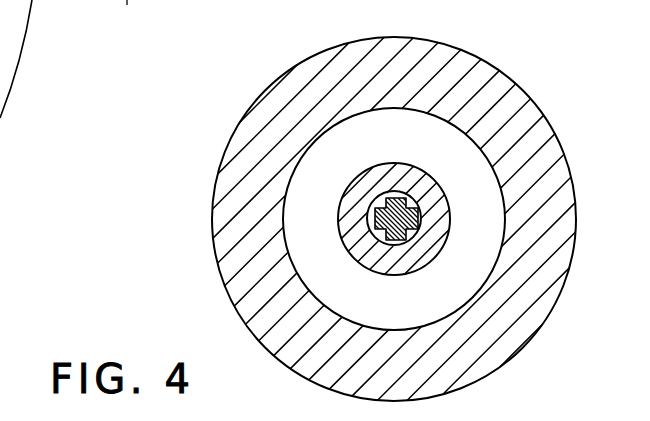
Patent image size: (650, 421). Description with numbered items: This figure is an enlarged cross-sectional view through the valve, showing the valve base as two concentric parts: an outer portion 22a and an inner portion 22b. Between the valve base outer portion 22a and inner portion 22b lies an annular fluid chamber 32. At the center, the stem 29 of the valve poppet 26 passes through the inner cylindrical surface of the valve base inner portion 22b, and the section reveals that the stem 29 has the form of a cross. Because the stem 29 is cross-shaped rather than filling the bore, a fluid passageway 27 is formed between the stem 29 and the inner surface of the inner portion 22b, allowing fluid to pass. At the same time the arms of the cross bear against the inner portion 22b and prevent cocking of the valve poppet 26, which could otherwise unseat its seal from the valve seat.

The valve base outer portion 22a is at (548, 46).
The valve base inner portion 22b is at (435, 151).
The valve poppet 26 is at (421, 214).
The fluid passageway 27 is at (408, 233).
The stem 29 is at (377, 217).
The fluid chamber 32 is at (410, 310).